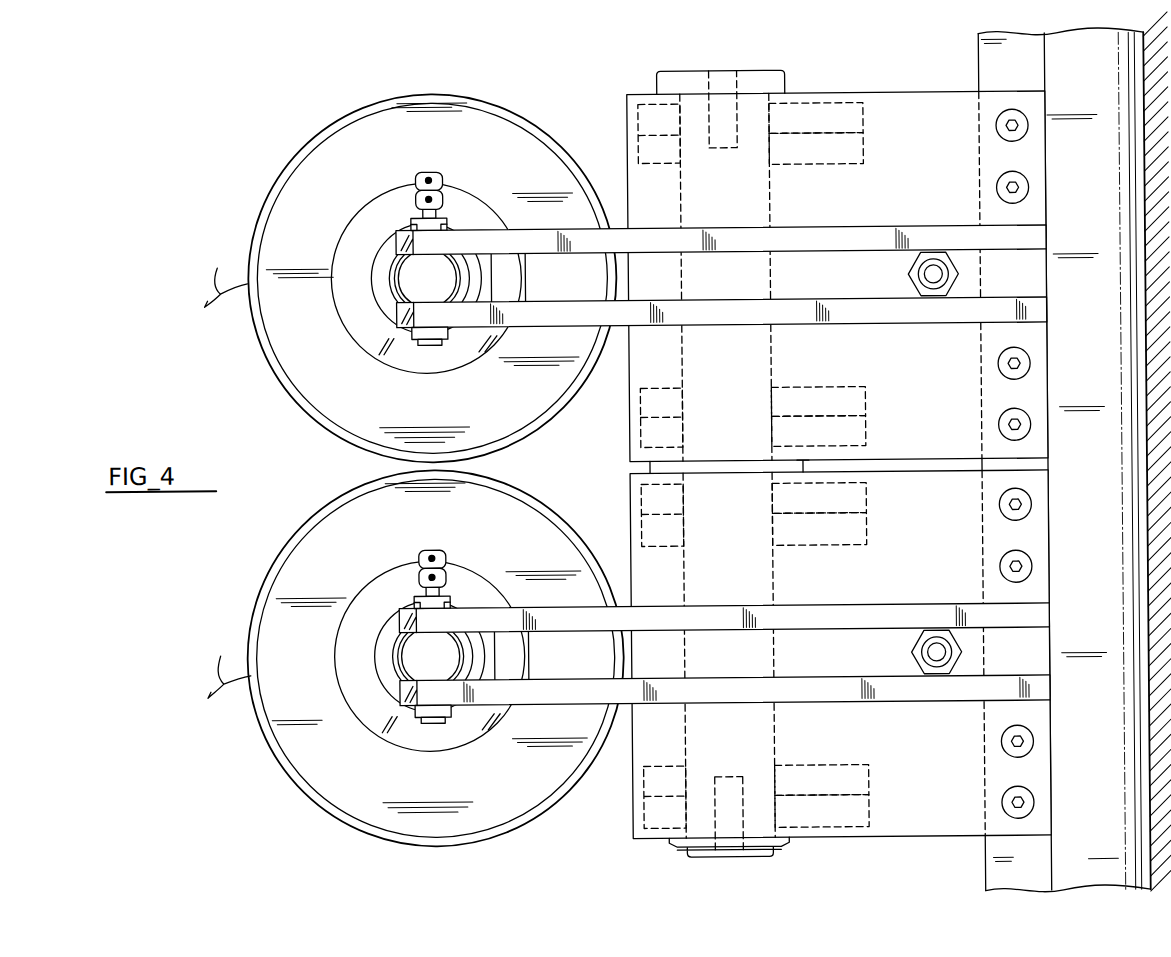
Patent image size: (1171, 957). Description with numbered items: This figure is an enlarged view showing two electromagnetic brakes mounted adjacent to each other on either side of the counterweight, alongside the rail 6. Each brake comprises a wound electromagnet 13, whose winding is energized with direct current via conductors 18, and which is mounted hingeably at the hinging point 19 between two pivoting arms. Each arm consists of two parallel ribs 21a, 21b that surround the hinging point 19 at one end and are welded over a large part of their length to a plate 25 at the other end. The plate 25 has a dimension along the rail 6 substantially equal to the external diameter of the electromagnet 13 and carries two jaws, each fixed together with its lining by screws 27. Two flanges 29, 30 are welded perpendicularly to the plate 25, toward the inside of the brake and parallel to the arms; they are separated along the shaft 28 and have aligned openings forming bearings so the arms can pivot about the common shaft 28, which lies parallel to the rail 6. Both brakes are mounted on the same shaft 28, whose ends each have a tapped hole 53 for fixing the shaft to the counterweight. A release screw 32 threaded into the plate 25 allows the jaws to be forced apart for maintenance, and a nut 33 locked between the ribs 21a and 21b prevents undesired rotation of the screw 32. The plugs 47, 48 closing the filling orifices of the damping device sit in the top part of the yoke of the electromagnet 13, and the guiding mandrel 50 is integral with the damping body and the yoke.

The rail 6 is at (1012, 48).
The electromagnet 13 is at (254, 222).
The conductors 18 is at (221, 490).
The hinging point 19 is at (420, 213).
The rib 21a is at (905, 315).
The rib 21b is at (870, 232).
The plate 25 is at (628, 180).
The screws 27 is at (1002, 127).
The shaft 28 is at (742, 276).
The flange 29 is at (812, 152).
The flange 30 is at (848, 119).
The release screw 32 is at (938, 676).
The nut 33 is at (962, 650).
The plug 47 is at (450, 196).
The plug 48 is at (438, 176).
The guiding mandrel 50 is at (416, 275).
The tapped hole 53 is at (722, 72).